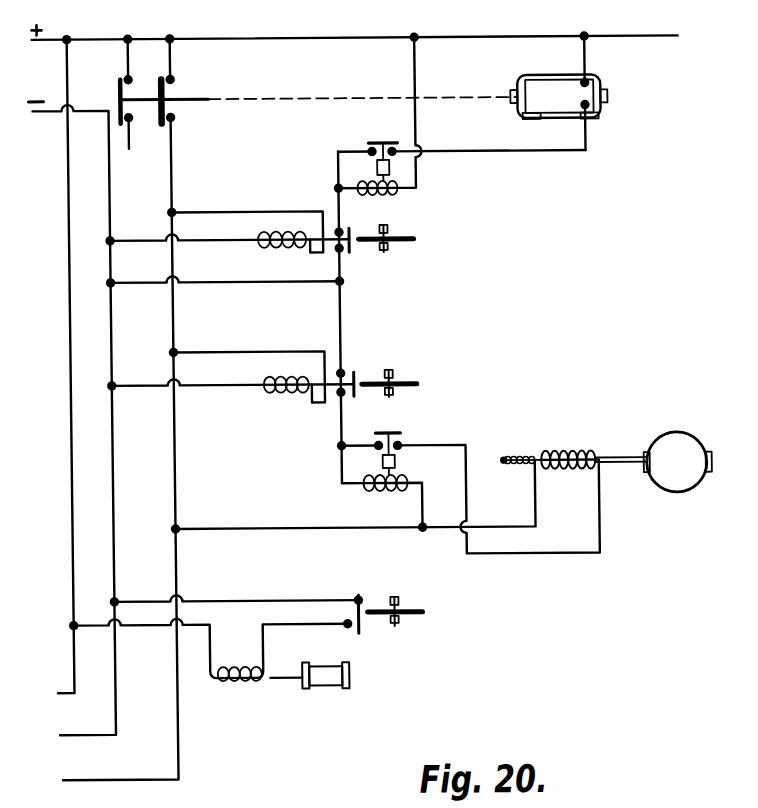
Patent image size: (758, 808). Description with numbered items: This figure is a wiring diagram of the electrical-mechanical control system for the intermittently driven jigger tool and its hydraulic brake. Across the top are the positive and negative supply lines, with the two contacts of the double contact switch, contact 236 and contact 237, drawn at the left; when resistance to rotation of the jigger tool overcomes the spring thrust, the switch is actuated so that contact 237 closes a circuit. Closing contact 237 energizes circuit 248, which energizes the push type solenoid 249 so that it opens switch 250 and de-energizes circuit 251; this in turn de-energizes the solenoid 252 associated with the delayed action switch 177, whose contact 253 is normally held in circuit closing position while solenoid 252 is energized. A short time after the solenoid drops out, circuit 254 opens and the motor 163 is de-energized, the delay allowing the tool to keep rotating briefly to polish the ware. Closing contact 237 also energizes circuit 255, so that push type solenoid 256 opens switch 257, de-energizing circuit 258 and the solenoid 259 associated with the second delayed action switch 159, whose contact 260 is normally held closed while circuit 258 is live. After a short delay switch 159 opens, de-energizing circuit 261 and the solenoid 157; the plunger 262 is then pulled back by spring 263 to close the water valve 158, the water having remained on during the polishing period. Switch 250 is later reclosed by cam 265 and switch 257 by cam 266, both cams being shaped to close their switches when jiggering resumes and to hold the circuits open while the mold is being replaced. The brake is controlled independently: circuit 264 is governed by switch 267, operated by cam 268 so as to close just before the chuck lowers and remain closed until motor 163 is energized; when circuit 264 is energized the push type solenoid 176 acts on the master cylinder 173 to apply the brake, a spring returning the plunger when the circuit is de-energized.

The contact 236 is at (122, 79).
The contact 237 is at (169, 90).
The motor 163 is at (578, 55).
The delayed action switch 177 is at (366, 143).
The contact 253 is at (398, 120).
The circuit 254 is at (495, 128).
The circuit 251 is at (422, 164).
The solenoid 252 is at (400, 190).
The circuit 248 is at (252, 186).
The push type solenoid 249 is at (288, 243).
The switch 250 is at (353, 253).
The cam 265 is at (416, 236).
The circuit 255 is at (279, 325).
The push type solenoid 256 is at (288, 387).
The switch 257 is at (354, 375).
The cam 266 is at (411, 381).
The circuit 258 is at (350, 487).
The solenoid 259 is at (392, 486).
The contact 260 is at (381, 432).
The delayed action switch 159 is at (403, 436).
The circuit 261 is at (466, 486).
The spring 263 is at (515, 458).
The solenoid 157 is at (589, 438).
The plunger 262 is at (618, 457).
The water valve 158 is at (683, 434).
The circuit 264 is at (279, 577).
The switch 267 is at (358, 600).
The cam 268 is at (409, 618).
The master cylinder 173 is at (315, 661).
The solenoid 176 is at (256, 687).